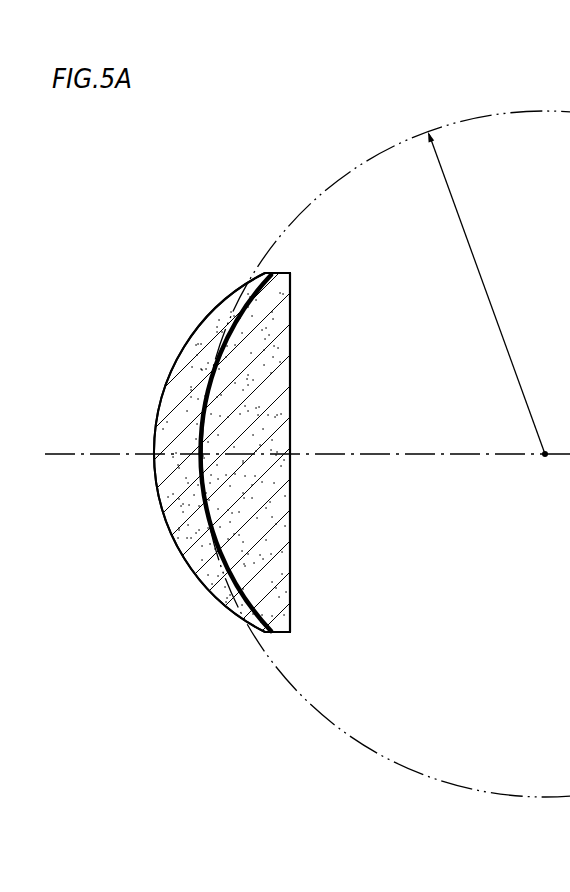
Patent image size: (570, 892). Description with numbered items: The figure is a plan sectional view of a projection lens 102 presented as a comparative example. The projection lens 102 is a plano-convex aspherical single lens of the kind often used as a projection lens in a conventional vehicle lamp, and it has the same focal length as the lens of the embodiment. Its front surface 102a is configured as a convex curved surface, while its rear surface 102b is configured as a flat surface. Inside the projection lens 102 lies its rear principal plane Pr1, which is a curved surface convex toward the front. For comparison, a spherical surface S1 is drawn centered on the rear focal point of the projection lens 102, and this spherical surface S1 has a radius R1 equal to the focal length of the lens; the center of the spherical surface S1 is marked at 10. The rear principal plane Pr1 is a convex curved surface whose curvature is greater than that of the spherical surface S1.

The projection lens 102 is at (176, 356).
The front surface 102a is at (167, 517).
The rear surface 102b is at (291, 514).
The rear principal plane Pr1 is at (233, 330).
The radius R1 is at (486, 293).
The spherical surface S1 is at (317, 717).
The center of curvature 10 is at (556, 398).